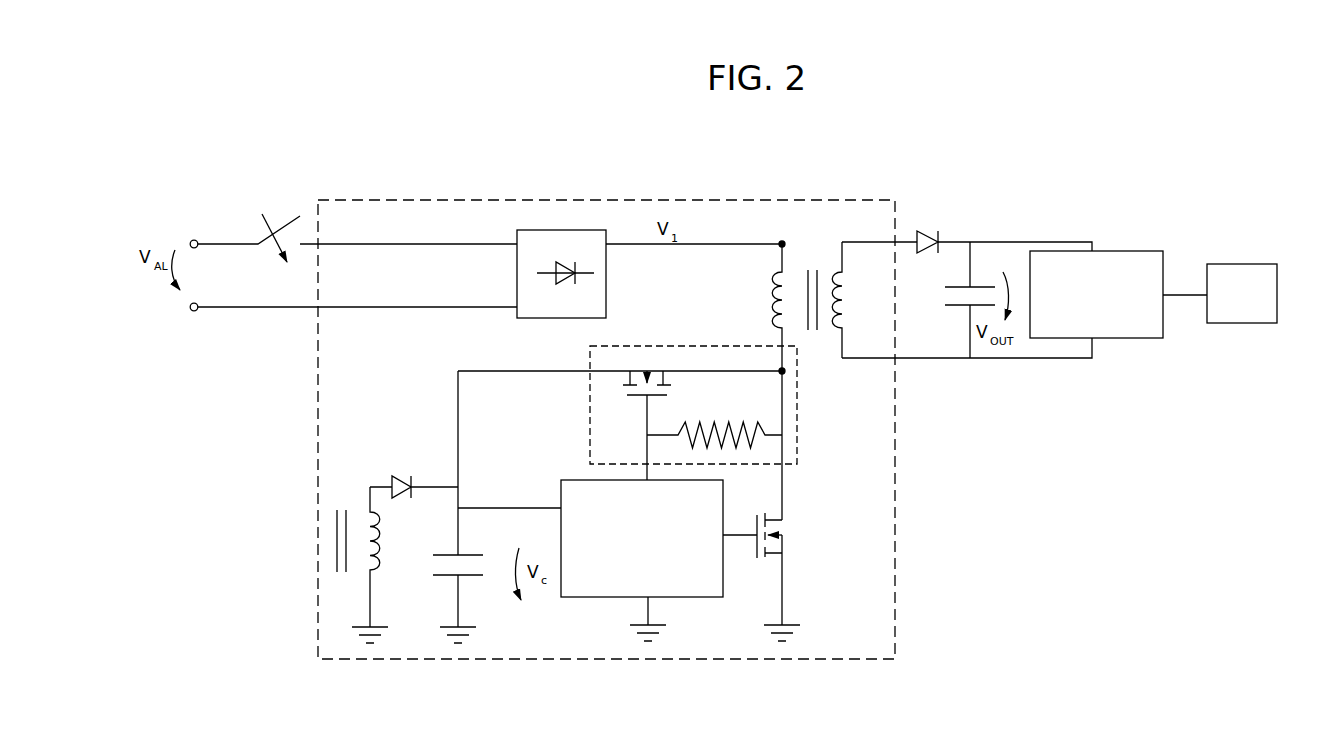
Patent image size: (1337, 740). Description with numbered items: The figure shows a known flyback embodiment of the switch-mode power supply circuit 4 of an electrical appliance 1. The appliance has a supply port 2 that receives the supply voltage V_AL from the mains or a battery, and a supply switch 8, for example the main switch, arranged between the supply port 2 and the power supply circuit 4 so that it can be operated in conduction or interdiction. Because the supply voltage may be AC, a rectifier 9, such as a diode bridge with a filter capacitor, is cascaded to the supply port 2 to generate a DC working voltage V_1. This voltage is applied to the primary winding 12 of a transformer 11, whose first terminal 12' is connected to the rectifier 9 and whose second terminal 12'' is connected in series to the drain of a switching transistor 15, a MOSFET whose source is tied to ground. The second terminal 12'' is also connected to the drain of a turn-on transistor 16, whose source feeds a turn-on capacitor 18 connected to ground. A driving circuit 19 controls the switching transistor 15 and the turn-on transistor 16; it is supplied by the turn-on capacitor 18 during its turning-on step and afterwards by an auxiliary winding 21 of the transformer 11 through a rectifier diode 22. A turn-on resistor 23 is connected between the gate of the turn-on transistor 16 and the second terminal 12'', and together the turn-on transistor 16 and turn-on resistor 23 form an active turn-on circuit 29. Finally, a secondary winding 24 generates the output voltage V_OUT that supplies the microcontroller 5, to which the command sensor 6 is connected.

The electrical appliance 1 is at (280, 135).
The supply port 2 is at (206, 265).
The power supply circuit 4 is at (481, 200).
The microcontroller 5 is at (1148, 253).
The command sensor 6 is at (1262, 266).
The supply switch 8 is at (300, 216).
The rectifier 9 is at (592, 232).
The transformer 11 is at (816, 262).
The primary winding 12 is at (752, 307).
The first terminal 12' is at (748, 231).
The second terminal 12'' is at (823, 375).
The switching transistor 15 is at (770, 519).
The turn-on transistor 16 is at (636, 397).
The turn-on capacitor 18 is at (470, 555).
The driving circuit 19 is at (578, 597).
The auxiliary winding 21 is at (378, 545).
The rectifier diode 22 is at (398, 478).
The turn-on resistor 23 is at (700, 420).
The secondary winding 24 is at (848, 284).
The turn-on circuit 29 is at (797, 423).